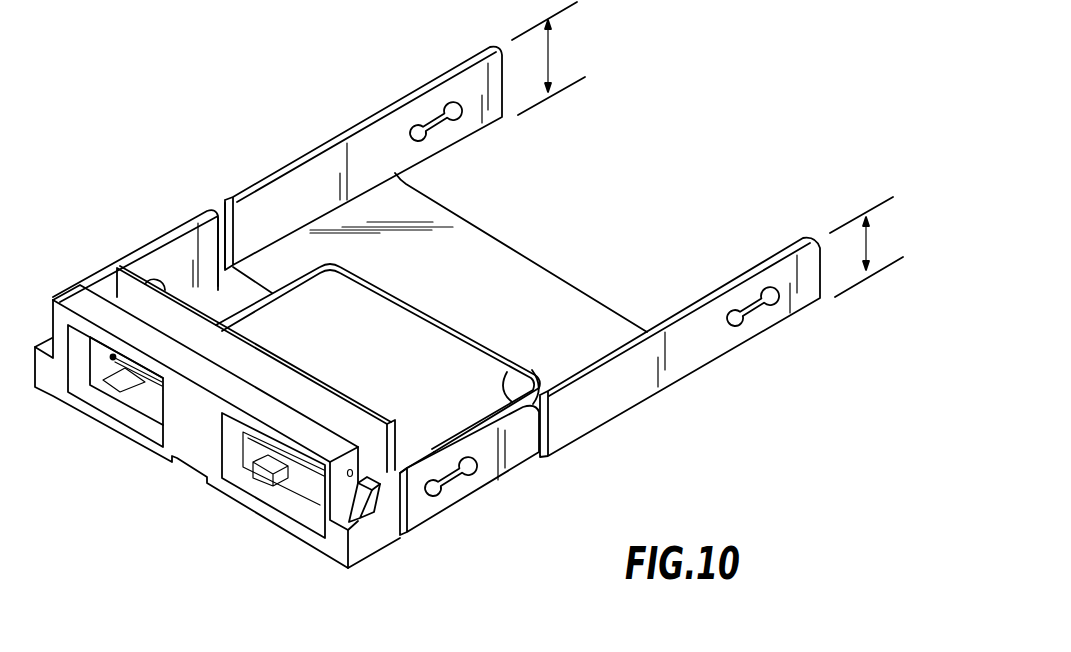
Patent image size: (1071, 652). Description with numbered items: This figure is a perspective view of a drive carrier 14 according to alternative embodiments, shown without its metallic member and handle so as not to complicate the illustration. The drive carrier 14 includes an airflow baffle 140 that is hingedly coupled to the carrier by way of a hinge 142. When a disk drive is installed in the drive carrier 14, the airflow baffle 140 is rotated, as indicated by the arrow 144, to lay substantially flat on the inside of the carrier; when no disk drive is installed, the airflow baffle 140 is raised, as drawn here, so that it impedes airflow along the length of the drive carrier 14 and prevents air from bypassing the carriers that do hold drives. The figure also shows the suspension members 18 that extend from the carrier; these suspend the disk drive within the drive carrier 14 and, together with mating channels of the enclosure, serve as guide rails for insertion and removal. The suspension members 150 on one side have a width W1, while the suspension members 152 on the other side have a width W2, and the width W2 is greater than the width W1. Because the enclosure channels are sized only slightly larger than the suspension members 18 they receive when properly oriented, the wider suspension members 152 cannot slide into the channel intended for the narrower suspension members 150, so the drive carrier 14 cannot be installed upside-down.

The drive carrier 14 is at (192, 502).
The suspension members 18 is at (96, 243).
The airflow baffle 140 is at (303, 372).
The hinge 142 is at (110, 383).
The arrow 144 is at (378, 431).
The suspension members 150 is at (593, 364).
The suspension members 152 is at (235, 195).
The width W1 is at (868, 247).
The width W2 is at (552, 58).